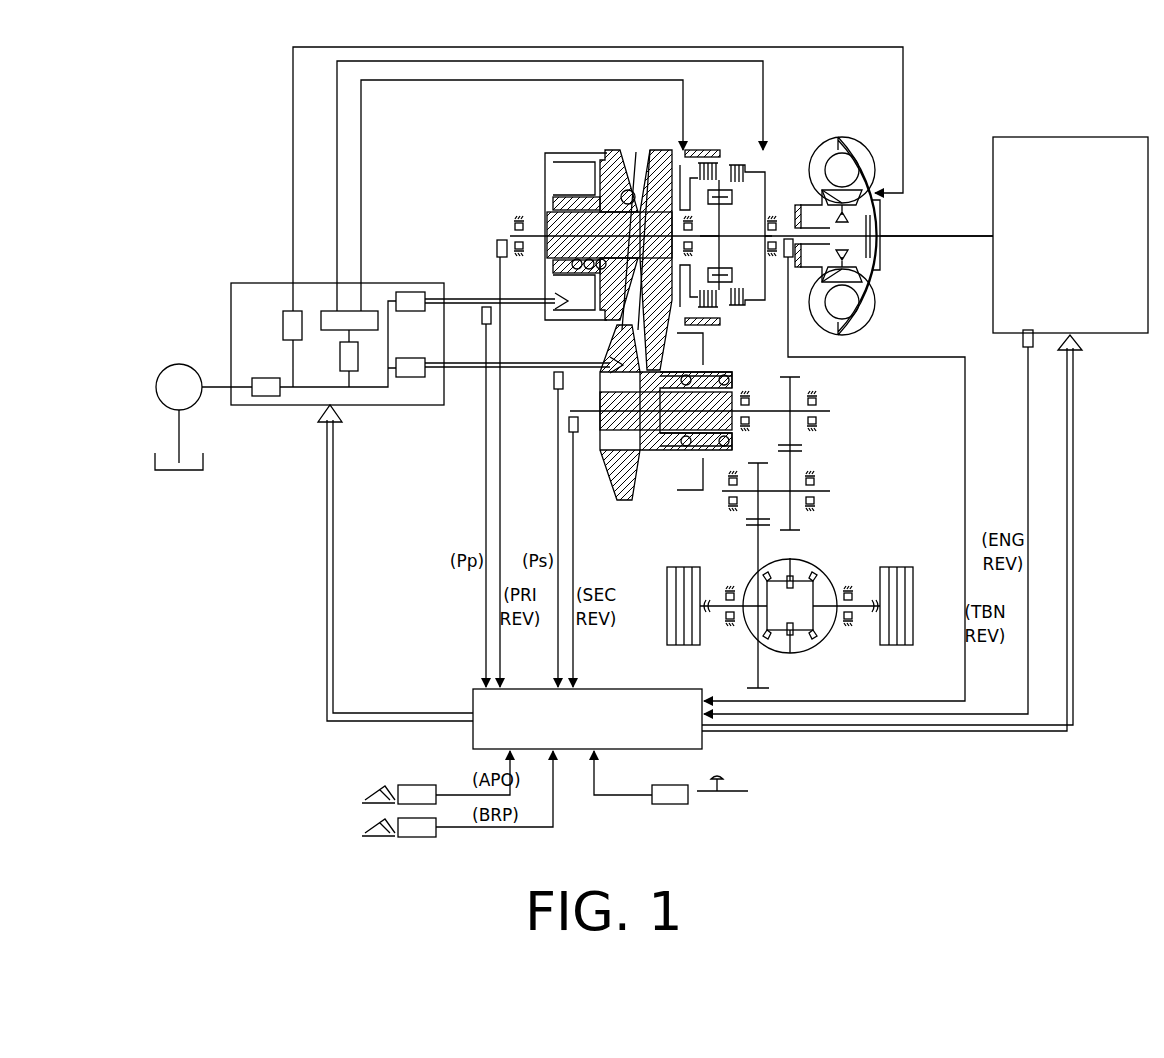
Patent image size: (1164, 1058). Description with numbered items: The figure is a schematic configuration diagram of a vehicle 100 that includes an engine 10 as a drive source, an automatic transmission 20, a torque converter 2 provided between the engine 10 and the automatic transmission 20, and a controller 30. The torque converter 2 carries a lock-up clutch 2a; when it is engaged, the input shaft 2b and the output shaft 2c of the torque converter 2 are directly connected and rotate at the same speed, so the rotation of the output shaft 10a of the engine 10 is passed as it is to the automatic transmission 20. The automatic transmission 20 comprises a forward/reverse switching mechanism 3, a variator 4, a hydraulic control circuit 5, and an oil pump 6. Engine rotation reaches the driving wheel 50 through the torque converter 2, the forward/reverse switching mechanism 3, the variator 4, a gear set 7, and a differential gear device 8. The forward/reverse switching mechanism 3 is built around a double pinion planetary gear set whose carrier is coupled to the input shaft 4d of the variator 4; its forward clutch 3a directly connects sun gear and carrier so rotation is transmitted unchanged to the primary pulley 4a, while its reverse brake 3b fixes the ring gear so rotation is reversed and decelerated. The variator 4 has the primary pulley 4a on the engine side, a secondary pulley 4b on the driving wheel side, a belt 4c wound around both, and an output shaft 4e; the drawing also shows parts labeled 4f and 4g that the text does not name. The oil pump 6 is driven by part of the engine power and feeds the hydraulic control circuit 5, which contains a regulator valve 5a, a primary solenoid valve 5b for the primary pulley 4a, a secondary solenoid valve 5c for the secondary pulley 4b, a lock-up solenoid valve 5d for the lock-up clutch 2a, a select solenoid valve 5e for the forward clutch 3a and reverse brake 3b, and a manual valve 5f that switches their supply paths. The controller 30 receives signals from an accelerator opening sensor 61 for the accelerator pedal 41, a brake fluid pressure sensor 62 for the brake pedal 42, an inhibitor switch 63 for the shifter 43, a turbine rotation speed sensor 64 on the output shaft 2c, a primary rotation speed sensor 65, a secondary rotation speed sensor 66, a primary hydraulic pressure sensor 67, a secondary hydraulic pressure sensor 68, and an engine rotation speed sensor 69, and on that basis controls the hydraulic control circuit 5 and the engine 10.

The vehicle 100 is at (250, 750).
The engine 10 is at (1075, 135).
The output shaft of the engine 10a is at (985, 238).
The automatic transmission 20 is at (460, 150).
The torque converter 2 is at (812, 130).
The lock-up clutch 2a is at (870, 262).
The input shaft 2b is at (875, 210).
The output shaft 2c is at (790, 230).
The forward/reverse switching mechanism 3 is at (690, 148).
The forward clutch 3a is at (760, 160).
The reverse brake 3b is at (705, 155).
The variator 4 is at (532, 172).
The primary pulley 4a is at (556, 148).
The secondary pulley 4b is at (705, 500).
The belt 4c is at (628, 190).
The input shaft 4d is at (512, 236).
The output shaft 4e is at (742, 395).
The belt 4f is at (643, 155).
The secondary pulley shaft 4g is at (635, 500).
The hydraulic control circuit 5 is at (232, 288).
The regulator valve 5a is at (268, 398).
The primary solenoid valve 5b is at (410, 290).
The secondary solenoid valve 5c is at (410, 379).
The lock-up solenoid valve 5d is at (288, 309).
The select solenoid valve 5e is at (340, 362).
The manual valve 5f is at (330, 309).
The oil pump 6 is at (168, 365).
The gear set 7 is at (838, 438).
The differential gear device 8 is at (830, 560).
The driving wheel 50 is at (915, 585).
The controller 30 is at (472, 705).
The accelerator pedal 41 is at (362, 797).
The brake pedal 42 is at (362, 832).
The shifter 43 is at (735, 777).
The accelerator opening sensor 61 is at (412, 784).
The brake fluid pressure sensor 62 is at (437, 833).
The inhibitor switch 63 is at (683, 805).
The turbine rotation speed sensor 64 is at (786, 262).
The primary rotation speed sensor 65 is at (503, 258).
The secondary rotation speed sensor 66 is at (574, 433).
The primary hydraulic pressure sensor 67 is at (484, 326).
The secondary hydraulic pressure sensor 68 is at (556, 390).
The engine rotation speed sensor 69 is at (1026, 349).